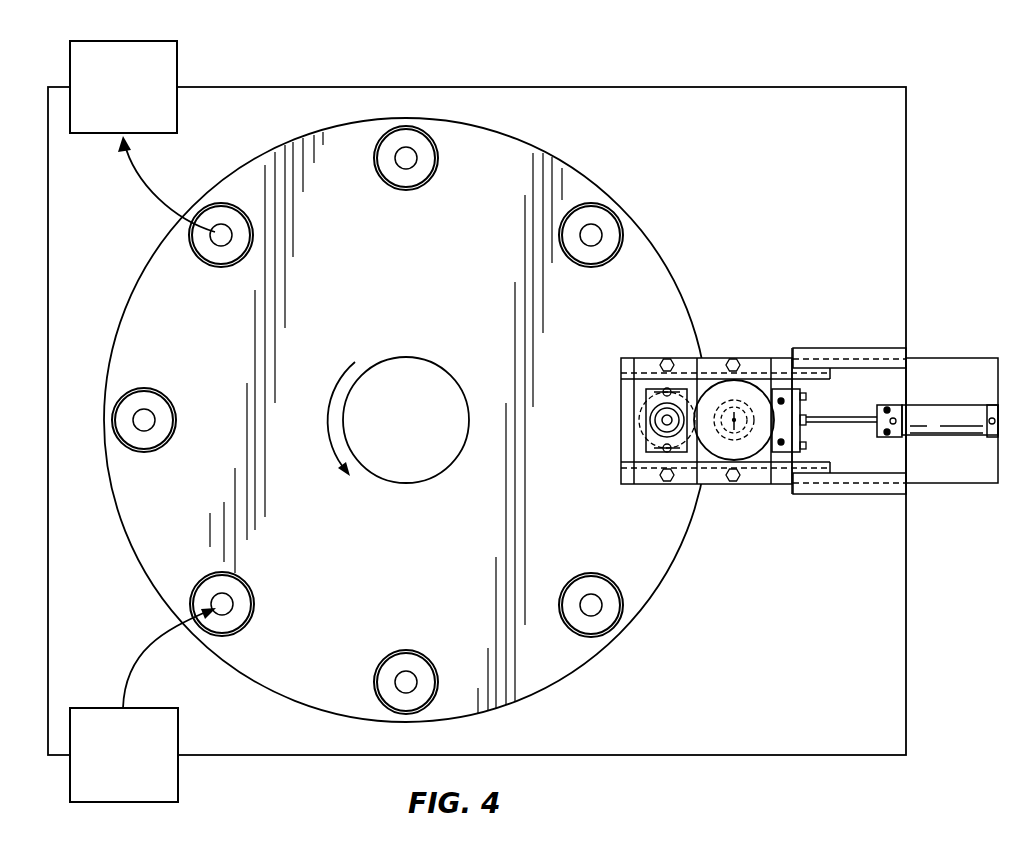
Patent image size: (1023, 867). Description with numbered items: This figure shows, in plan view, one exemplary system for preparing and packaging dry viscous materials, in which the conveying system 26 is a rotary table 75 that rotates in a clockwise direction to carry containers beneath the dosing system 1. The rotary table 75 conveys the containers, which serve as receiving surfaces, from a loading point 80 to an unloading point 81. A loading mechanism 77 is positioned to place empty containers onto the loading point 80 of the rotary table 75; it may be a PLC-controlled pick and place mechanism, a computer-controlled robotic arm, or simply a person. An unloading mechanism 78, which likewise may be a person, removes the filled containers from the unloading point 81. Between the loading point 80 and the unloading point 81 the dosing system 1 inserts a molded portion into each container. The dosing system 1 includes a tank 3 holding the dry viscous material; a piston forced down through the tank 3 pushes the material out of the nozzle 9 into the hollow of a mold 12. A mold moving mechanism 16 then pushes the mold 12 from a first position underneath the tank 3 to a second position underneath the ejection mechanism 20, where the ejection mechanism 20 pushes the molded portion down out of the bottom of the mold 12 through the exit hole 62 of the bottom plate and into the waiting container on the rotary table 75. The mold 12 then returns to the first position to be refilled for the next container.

The dosing system 1 is at (840, 252).
The tank 3 is at (753, 390).
The nozzle 9 is at (733, 430).
The mold 12 is at (700, 383).
The mold moving mechanism 16 is at (948, 405).
The ejection mechanism 20 is at (661, 407).
The conveyor system 26 is at (62, 290).
The exit hole 62 is at (686, 392).
The rotary table 75 is at (494, 162).
The loading mechanism 77 is at (178, 792).
The unloading mechanism 78 is at (177, 66).
The loading point 80 is at (221, 600).
The unloading point 81 is at (228, 232).